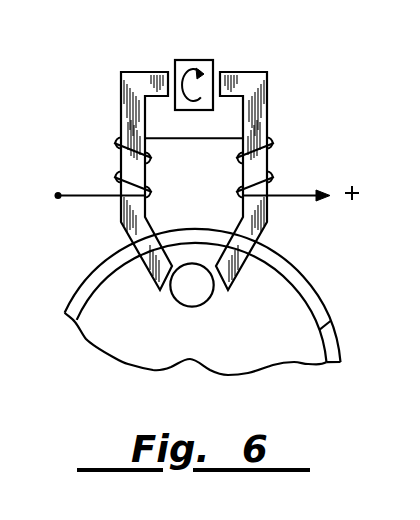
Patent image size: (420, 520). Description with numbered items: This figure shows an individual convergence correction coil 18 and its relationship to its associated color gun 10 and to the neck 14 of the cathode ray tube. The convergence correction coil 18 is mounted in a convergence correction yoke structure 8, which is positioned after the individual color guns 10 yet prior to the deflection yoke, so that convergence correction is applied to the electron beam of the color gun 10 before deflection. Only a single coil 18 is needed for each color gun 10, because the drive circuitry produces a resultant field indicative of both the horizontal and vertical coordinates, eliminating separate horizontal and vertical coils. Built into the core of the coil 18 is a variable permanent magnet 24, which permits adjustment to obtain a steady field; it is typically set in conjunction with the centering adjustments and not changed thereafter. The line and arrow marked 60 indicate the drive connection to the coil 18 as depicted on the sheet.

The convergence correction yoke structure 8 is at (312, 283).
The color gun 10 is at (201, 297).
The neck of CRT 14 is at (331, 320).
The convergence correction coil 18 is at (271, 143).
The variable permanent magnet 24 is at (190, 60).
The current supply line 60 is at (58, 196).